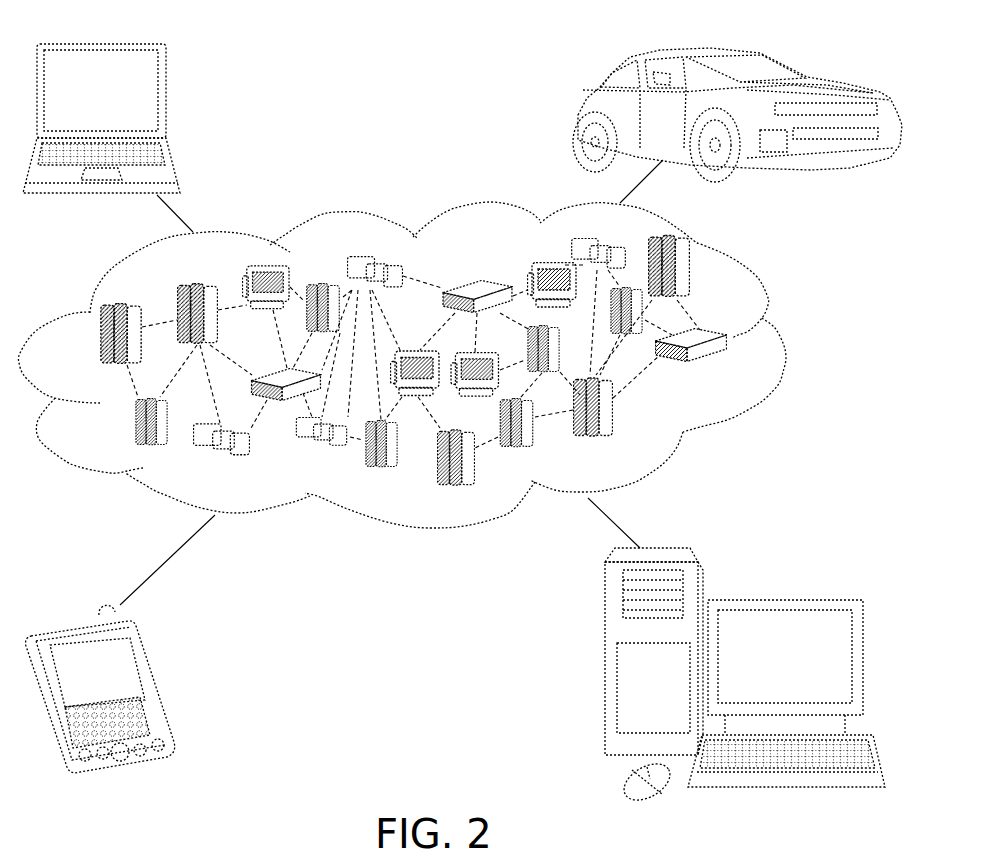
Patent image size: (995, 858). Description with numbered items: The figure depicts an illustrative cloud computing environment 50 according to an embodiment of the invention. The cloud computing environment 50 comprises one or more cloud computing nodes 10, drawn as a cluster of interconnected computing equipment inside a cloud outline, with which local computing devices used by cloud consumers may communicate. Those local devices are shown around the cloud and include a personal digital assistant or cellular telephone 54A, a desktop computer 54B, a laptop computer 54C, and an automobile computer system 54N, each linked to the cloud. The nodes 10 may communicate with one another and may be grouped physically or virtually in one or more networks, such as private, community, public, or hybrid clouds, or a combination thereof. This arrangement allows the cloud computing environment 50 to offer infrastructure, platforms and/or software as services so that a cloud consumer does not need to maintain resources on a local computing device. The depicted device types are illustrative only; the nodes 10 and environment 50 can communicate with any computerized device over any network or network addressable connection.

The cloud computing nodes 10 is at (460, 425).
The cloud computing environment 50 is at (782, 343).
The personal digital assistant (PDA) or cellular telephone 54A is at (157, 683).
The desktop computer 54B is at (783, 600).
The laptop computer 54C is at (164, 100).
The automobile computer system 54N is at (576, 110).